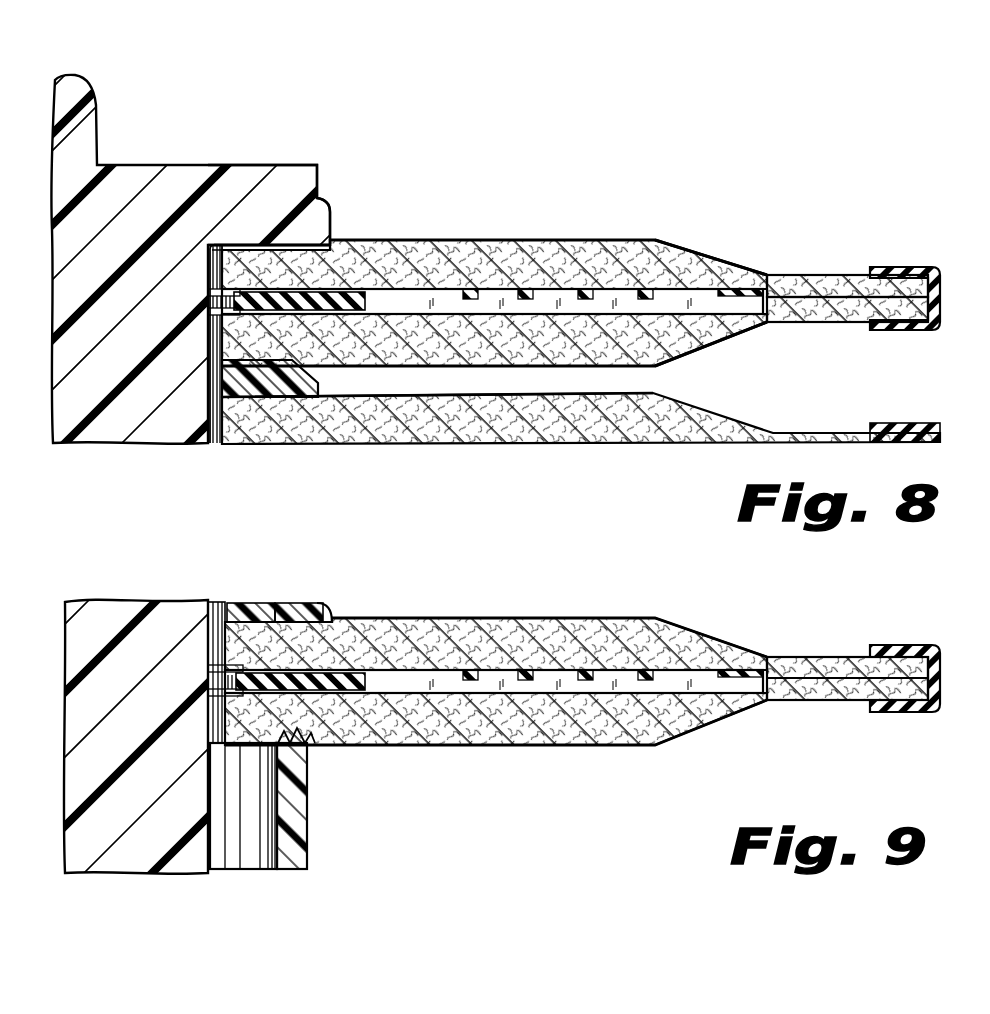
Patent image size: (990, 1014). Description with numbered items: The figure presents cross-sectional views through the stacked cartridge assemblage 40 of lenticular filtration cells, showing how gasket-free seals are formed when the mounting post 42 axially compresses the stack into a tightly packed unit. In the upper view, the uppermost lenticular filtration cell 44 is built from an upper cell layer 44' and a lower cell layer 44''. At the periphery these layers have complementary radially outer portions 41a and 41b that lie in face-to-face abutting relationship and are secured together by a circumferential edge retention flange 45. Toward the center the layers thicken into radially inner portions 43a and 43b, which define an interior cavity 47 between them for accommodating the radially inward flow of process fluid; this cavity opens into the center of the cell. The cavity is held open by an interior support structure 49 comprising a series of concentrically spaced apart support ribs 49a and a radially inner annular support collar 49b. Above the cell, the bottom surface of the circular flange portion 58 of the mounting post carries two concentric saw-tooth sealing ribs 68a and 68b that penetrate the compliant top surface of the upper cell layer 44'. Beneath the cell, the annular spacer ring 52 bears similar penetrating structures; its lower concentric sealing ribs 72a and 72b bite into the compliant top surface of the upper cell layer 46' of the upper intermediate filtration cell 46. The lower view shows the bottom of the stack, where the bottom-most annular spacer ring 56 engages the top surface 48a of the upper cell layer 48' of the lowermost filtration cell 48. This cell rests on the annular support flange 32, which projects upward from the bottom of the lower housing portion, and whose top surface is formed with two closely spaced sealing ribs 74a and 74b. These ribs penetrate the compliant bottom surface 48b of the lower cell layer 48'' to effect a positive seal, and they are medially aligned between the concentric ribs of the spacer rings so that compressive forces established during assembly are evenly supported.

In FIG. 8, the assemblage 40 is at (568, 130).
In FIG. 8, the mounting post 42 is at (100, 107).
In FIG. 9, the mounting post 42 is at (112, 612).
In FIG. 8, the circular flange portion 58 is at (317, 165).
In FIG. 8, the sealing rib 68a is at (233, 247).
In FIG. 8, the sealing rib 68b is at (277, 247).
In FIG. 8, the radially inner portion 43a is at (522, 248).
In FIG. 8, the upper cell layer 44' is at (548, 223).
In FIG. 8, the uppermost lenticular filtration cell 44 is at (711, 275).
In FIG. 8, the interior cavity 47 is at (418, 303).
In FIG. 8, the radially inner annular support collar 49b is at (320, 294).
In FIG. 8, the support ribs 49a is at (470, 288).
In FIG. 8, the interior support structure 49 is at (757, 280).
In FIG. 8, the radially inner portion 43b is at (537, 368).
In FIG. 8, the lower cell layer 44'' is at (494, 405).
In FIG. 8, the radially outer portion 41a is at (838, 283).
In FIG. 8, the radially outer portion 41b is at (820, 324).
In FIG. 8, the circumferential edge retention flange 45 is at (923, 267).
In FIG. 8, the annular spacer ring 52 is at (300, 388).
In FIG. 8, the upper intermediate filtration cell 46 is at (581, 407).
In FIG. 8, the upper cell layer 46' is at (437, 442).
In FIG. 9, the lower concentric sealing rib 72a is at (233, 603).
In FIG. 9, the lower concentric sealing rib 72b is at (290, 603).
In FIG. 9, the annular spacer ring 56 is at (340, 601).
In FIG. 9, the top surface 48a is at (542, 618).
In FIG. 9, the upper cell layer 48' is at (549, 619).
In FIG. 9, the lowermost filtration cell 48 is at (847, 654).
In FIG. 9, the lower cell layer 48'' is at (496, 743).
In FIG. 9, the bottom surface 48b is at (573, 746).
In FIG. 9, the sealing rib 74b is at (308, 748).
In FIG. 9, the sealing rib 74a is at (306, 788).
In FIG. 9, the annular support flange 32 is at (298, 828).